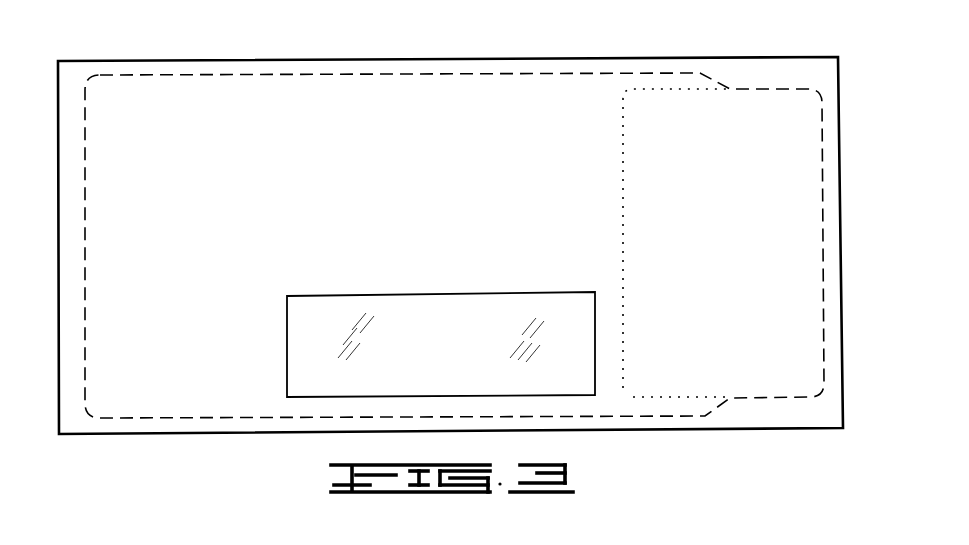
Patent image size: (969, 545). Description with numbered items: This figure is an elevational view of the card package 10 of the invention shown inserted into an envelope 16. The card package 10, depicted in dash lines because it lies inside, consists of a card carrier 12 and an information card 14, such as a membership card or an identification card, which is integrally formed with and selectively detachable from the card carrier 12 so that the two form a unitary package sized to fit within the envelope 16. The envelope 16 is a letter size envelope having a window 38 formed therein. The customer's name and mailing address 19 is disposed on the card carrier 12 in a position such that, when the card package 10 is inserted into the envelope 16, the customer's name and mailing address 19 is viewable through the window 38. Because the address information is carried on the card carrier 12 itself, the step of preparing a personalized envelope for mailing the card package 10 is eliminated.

The card package 10 is at (555, 93).
The card carrier 12 is at (244, 108).
The information card 14 is at (795, 129).
The envelope 16 is at (183, 437).
The customer's name and mailing address 19 is at (328, 330).
The window 38 is at (583, 395).